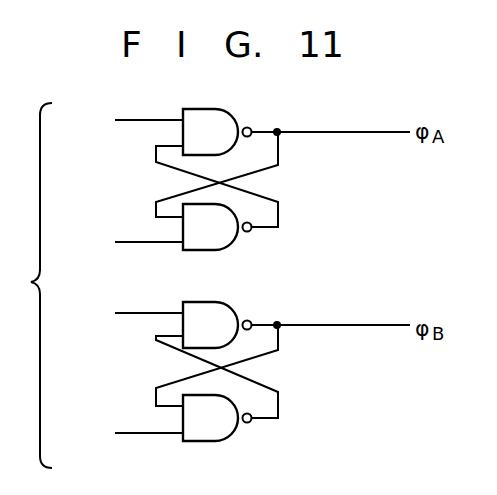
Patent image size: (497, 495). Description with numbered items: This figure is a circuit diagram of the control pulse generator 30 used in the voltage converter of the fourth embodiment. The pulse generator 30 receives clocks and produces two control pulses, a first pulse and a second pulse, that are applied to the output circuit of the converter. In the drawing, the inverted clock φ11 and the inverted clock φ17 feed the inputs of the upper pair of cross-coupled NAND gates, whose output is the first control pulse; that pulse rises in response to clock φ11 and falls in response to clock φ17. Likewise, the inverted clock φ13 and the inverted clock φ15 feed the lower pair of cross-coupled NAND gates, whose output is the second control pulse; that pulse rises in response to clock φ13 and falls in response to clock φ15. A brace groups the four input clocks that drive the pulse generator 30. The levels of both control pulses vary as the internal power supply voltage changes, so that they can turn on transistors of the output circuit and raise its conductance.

The pulse generator 30 is at (345, 377).
The clock φ 11 is at (106, 112).
The clock φ 13 is at (110, 316).
The clock φ 15 is at (110, 423).
The clock φ 17 is at (112, 233).